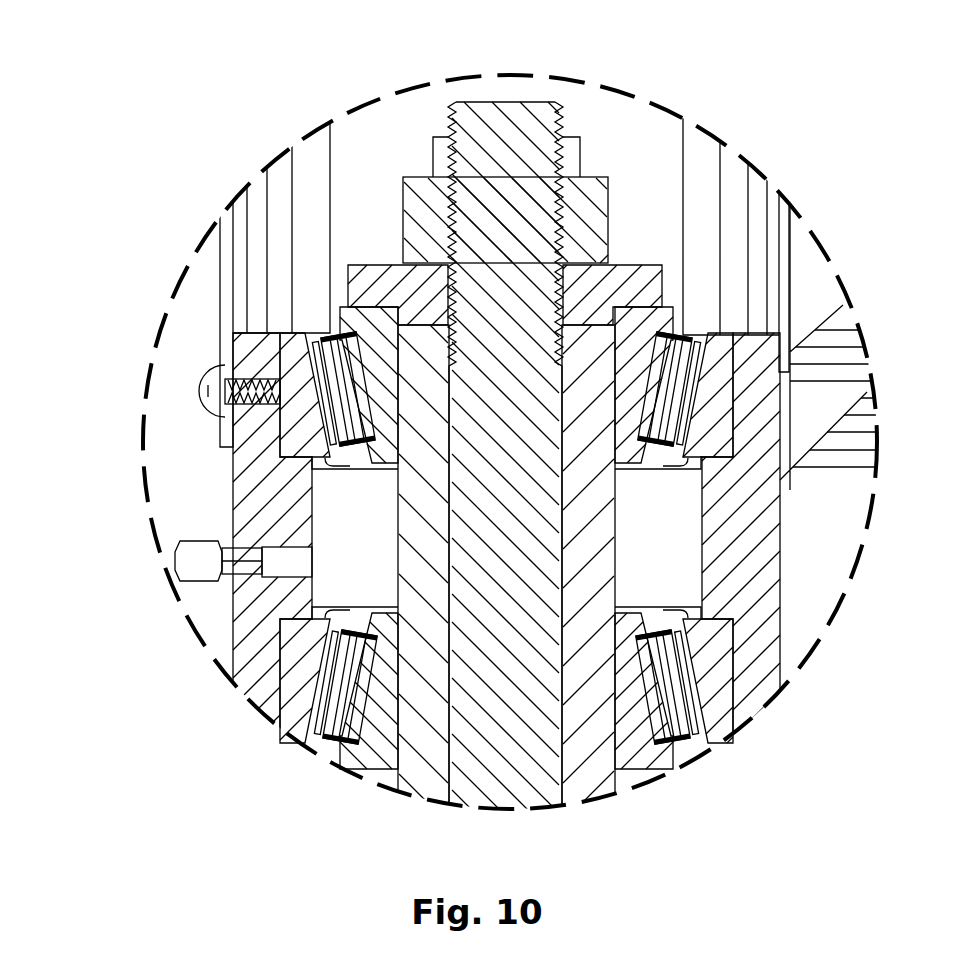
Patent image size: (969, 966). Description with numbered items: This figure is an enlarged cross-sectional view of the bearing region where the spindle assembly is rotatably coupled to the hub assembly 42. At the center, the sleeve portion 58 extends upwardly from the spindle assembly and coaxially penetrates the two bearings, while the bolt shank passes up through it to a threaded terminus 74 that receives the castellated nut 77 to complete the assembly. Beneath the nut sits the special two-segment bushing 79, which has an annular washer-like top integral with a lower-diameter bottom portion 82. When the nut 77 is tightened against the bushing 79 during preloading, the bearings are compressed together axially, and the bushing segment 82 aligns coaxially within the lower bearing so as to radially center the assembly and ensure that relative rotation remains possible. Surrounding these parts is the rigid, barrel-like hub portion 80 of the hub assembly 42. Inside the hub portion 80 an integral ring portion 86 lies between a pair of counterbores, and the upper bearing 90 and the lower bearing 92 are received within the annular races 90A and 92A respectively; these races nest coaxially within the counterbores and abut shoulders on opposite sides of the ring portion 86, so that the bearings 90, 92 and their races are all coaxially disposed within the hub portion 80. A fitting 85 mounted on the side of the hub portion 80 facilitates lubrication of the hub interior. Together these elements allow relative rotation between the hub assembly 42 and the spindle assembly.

The threaded terminus 74 is at (515, 104).
The castellated nut 77 is at (403, 213).
The two-segment bushing 79 is at (353, 272).
The hub assembly 42 is at (220, 257).
The bushing bottom portion 82 is at (588, 356).
The bearing 90 is at (343, 395).
The annular race 90A is at (297, 432).
The hub portion 80 is at (267, 483).
The ring portion 86 is at (240, 518).
The fitting 85 is at (173, 578).
The sleeve portion 58 is at (613, 528).
The annular race 92A is at (297, 645).
The bearing 92 is at (345, 697).